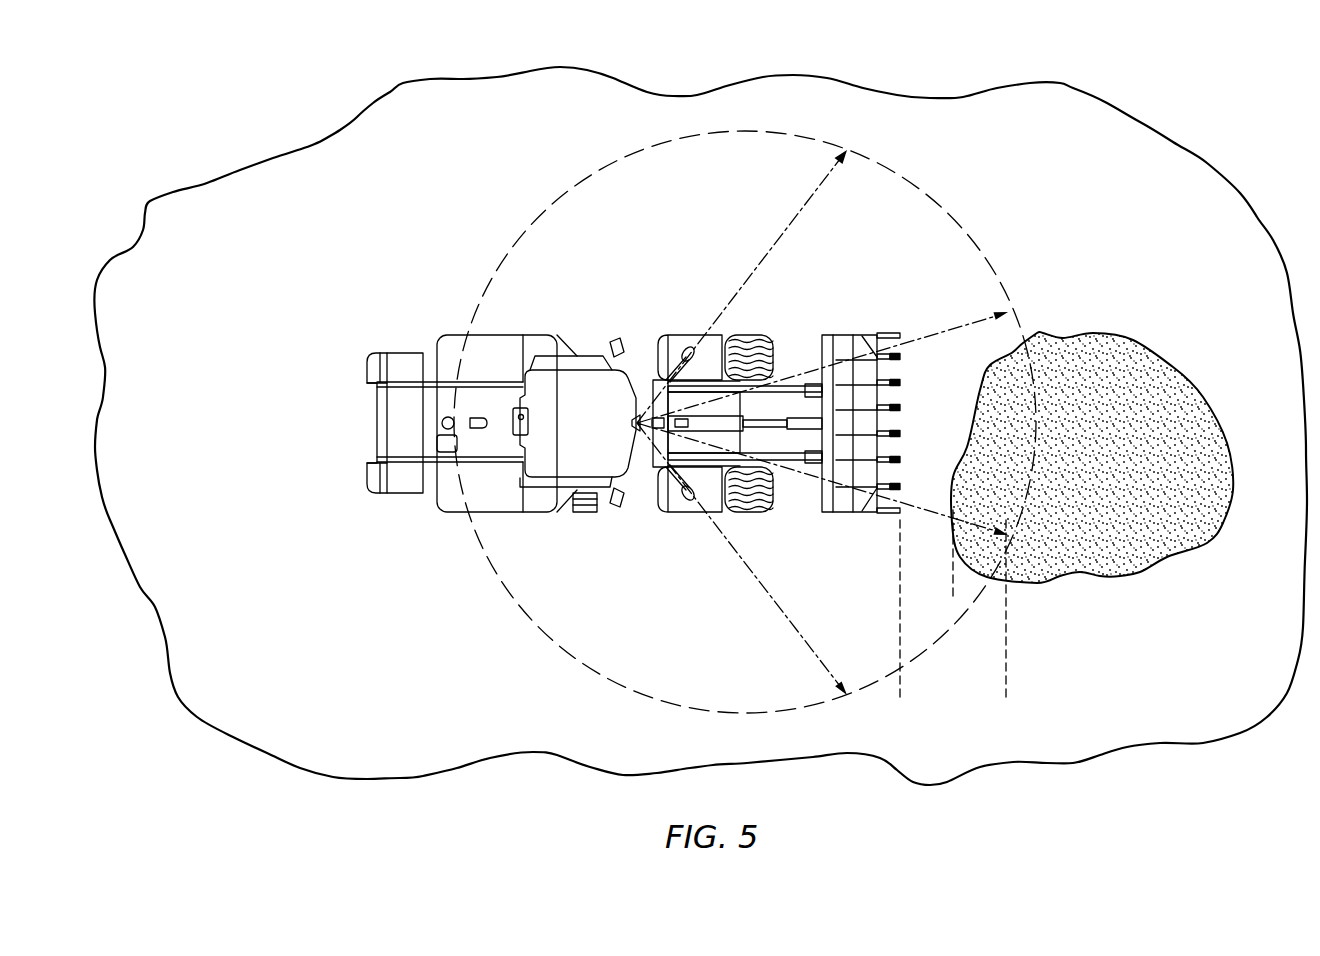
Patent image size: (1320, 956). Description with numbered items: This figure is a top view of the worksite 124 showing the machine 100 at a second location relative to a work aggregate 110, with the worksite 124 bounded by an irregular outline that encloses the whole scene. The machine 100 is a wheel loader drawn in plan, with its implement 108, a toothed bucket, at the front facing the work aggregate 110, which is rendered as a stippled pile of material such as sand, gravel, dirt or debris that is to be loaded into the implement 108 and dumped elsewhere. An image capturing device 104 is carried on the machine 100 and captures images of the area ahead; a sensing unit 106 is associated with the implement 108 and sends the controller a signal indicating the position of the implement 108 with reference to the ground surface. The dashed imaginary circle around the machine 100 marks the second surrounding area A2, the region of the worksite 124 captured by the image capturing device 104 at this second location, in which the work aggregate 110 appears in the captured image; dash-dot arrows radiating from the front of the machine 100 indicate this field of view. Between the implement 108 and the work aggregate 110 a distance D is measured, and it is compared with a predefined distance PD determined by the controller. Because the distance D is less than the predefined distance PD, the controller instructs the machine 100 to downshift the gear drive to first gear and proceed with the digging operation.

The machine 100 is at (606, 415).
The image capturing device 104 is at (650, 437).
The sensing unit 106 is at (650, 410).
The implement 108 is at (848, 352).
The work aggregate 110 is at (1185, 407).
The worksite 124 is at (1165, 105).
The second surrounding area A2 is at (952, 205).
The distance D is at (978, 578).
The predefined distance PD is at (996, 685).